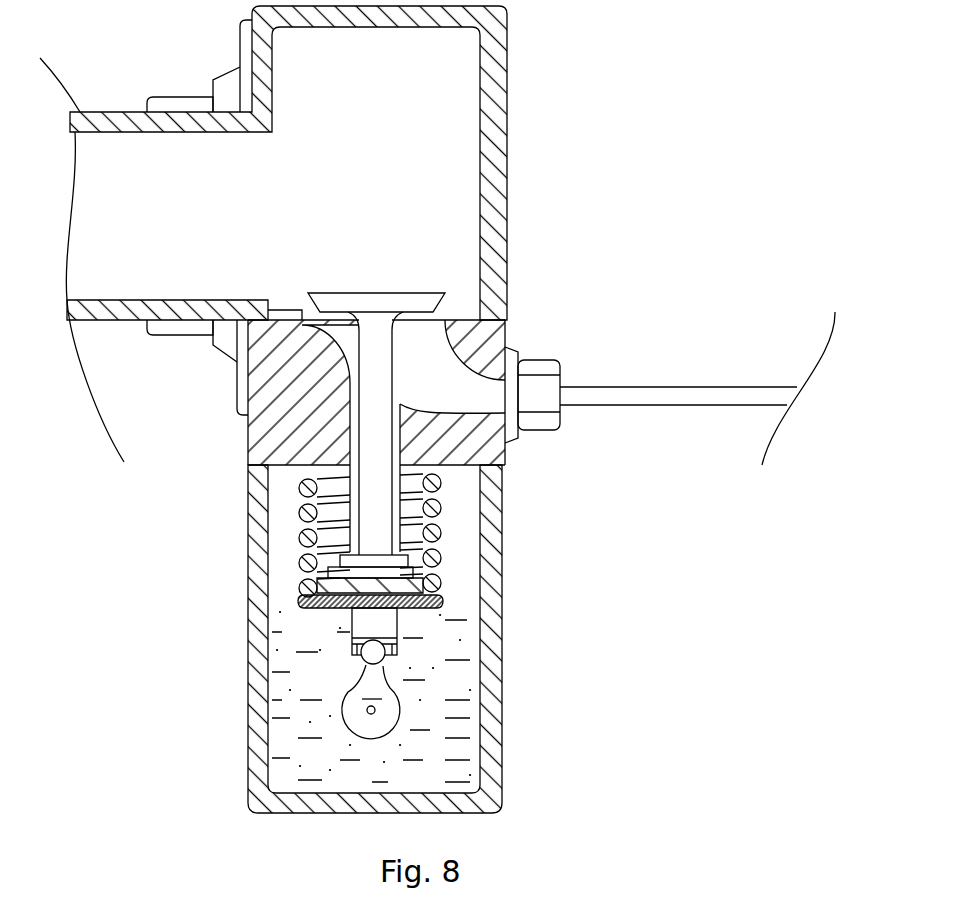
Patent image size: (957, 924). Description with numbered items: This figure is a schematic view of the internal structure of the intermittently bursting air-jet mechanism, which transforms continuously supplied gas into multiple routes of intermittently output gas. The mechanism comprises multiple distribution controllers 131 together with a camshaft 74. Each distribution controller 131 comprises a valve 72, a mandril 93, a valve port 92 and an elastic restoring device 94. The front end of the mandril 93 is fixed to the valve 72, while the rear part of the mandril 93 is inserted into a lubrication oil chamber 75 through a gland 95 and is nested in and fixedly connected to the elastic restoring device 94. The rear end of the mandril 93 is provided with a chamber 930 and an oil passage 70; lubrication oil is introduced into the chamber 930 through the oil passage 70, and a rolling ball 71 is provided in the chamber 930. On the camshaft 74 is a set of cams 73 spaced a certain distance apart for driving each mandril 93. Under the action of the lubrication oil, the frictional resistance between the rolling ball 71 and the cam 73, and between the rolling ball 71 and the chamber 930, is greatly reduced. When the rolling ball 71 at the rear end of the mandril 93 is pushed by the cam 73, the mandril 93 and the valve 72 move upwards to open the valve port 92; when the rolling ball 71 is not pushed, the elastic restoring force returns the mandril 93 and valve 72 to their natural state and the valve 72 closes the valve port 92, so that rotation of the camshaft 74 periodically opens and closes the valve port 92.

The oil passage 70 is at (383, 647).
The rolling ball 71 is at (394, 640).
The valve 72 is at (383, 303).
The cam 73 is at (360, 678).
The camshaft 74 is at (388, 716).
The lubrication oil chamber 75 is at (388, 768).
The valve port 92 is at (432, 348).
The mandril 93 is at (372, 397).
The elastic restoring device 94 is at (312, 535).
The gland 95 is at (349, 410).
The distribution controller 131 is at (305, 596).
The chamber 930 is at (352, 652).